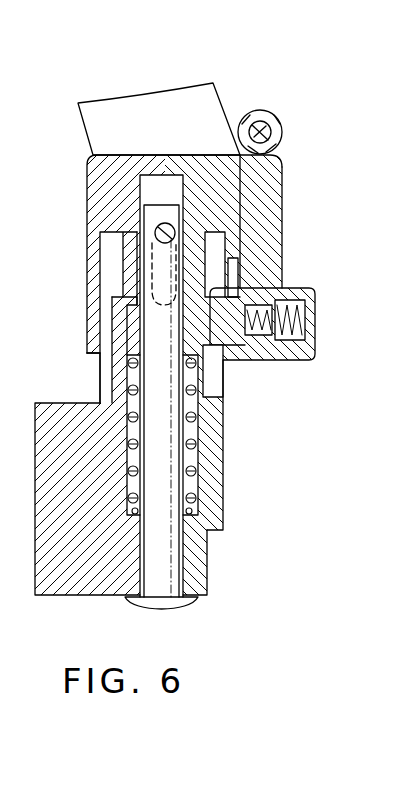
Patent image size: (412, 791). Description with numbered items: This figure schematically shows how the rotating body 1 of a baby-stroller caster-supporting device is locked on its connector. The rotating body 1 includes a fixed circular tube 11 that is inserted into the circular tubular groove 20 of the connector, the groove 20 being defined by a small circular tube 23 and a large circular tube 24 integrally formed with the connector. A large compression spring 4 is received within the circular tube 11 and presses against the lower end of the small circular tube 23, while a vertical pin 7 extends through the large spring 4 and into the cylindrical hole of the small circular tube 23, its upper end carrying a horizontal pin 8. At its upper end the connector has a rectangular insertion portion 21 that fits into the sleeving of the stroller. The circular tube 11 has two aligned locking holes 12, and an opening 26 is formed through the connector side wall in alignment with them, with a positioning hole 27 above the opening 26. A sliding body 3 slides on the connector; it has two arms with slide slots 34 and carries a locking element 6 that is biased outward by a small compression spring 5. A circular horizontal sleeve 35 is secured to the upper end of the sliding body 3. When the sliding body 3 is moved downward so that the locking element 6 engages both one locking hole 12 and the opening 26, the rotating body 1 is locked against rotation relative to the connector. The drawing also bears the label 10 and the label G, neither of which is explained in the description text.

The rotating body 1 is at (97, 597).
The sliding body 3 is at (283, 178).
The large compression spring 4 is at (214, 441).
The small compression spring 5 is at (315, 318).
The locking element 6 is at (250, 360).
The vertical pin 7 is at (205, 560).
The horizontal pin 8 is at (145, 214).
The slide member 10 is at (250, 222).
The fixed circular tube 11 is at (111, 380).
The locking holes 12 is at (128, 388).
The circular tubular groove 20 is at (99, 236).
The rectangular insertion portion 21 is at (218, 102).
The small circular tube 23 is at (135, 258).
The large circular tube 24 is at (95, 336).
The opening 26 is at (262, 340).
The positioning hole 27 is at (245, 262).
The slide slots 34 is at (126, 294).
The circular horizontal sleeve 35 is at (274, 118).
The seal gap G is at (283, 135).